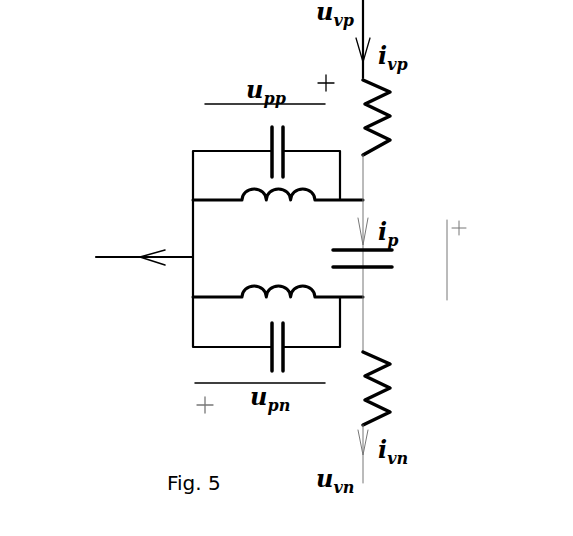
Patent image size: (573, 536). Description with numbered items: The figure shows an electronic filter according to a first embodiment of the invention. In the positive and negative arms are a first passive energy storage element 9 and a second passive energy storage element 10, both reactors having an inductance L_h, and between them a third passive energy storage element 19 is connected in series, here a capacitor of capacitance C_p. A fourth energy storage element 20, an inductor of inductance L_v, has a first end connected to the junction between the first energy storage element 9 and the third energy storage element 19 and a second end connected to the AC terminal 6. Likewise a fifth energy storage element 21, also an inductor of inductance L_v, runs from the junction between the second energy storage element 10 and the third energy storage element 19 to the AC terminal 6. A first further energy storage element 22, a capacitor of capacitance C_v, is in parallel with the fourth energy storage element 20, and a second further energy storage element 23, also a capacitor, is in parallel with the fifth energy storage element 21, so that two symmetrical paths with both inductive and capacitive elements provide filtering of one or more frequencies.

The AC terminal 6 is at (120, 252).
The first passive energy storage element 9 is at (385, 88).
The second passive energy storage element 10 is at (388, 372).
The third passive energy storage element 19 is at (395, 250).
The fourth energy storage element 20 is at (285, 193).
The fifth energy storage element 21 is at (242, 287).
The first further energy storage element 22 is at (265, 155).
The second further energy storage element 23 is at (265, 355).